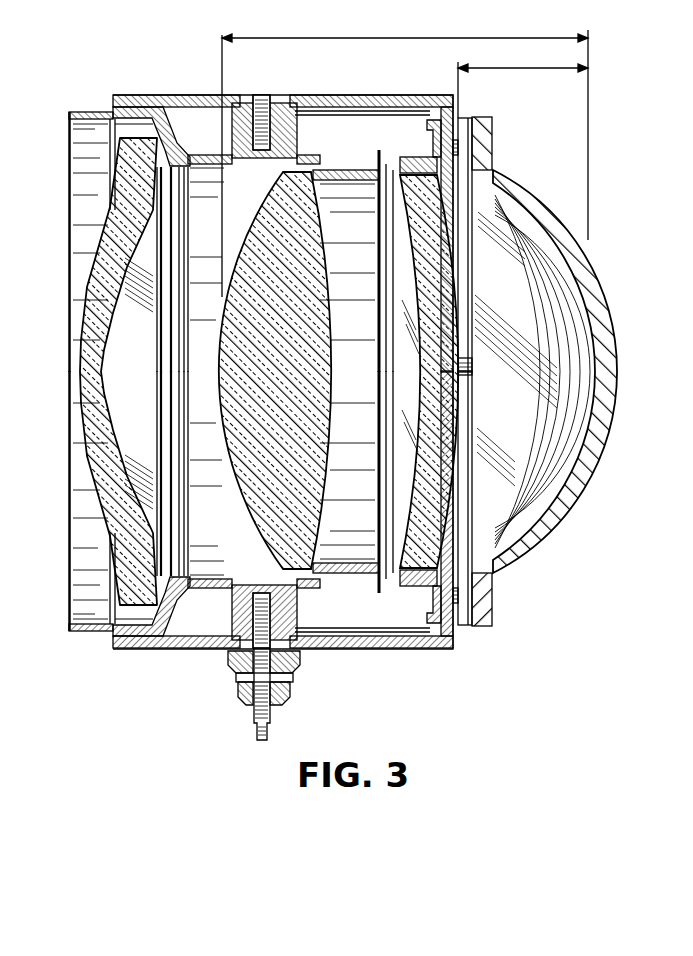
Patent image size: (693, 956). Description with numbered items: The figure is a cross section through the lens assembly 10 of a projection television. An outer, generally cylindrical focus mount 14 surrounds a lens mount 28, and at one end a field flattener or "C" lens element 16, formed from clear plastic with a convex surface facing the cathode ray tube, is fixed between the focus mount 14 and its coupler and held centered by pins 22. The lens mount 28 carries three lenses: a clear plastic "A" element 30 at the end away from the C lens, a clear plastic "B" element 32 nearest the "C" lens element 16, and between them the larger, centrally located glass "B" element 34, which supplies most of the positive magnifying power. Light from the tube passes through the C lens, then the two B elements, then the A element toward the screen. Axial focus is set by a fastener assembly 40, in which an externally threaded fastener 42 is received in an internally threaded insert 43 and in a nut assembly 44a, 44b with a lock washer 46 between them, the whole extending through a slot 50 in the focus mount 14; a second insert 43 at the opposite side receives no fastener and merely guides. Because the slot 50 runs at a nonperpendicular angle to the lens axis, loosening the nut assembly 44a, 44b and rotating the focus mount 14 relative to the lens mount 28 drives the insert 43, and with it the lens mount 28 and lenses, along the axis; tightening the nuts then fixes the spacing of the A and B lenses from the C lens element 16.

The lens assembly 10 is at (627, 29).
The focus mount 14 is at (385, 95).
The "C" lens element 16 is at (585, 290).
The pins 22 is at (466, 135).
The lens mount 28 is at (368, 170).
The "A" element 30 is at (90, 300).
The "B" element 32 is at (457, 405).
The "B" element 34 is at (330, 368).
The fastener assembly 40 is at (256, 699).
The externally threaded fastener 42 is at (257, 736).
The internally threaded insert 43 is at (256, 100).
The nut assembly 44a is at (232, 660).
The nut assembly 44b is at (283, 700).
The lock washer 46 is at (292, 677).
The slot 50 is at (262, 95).